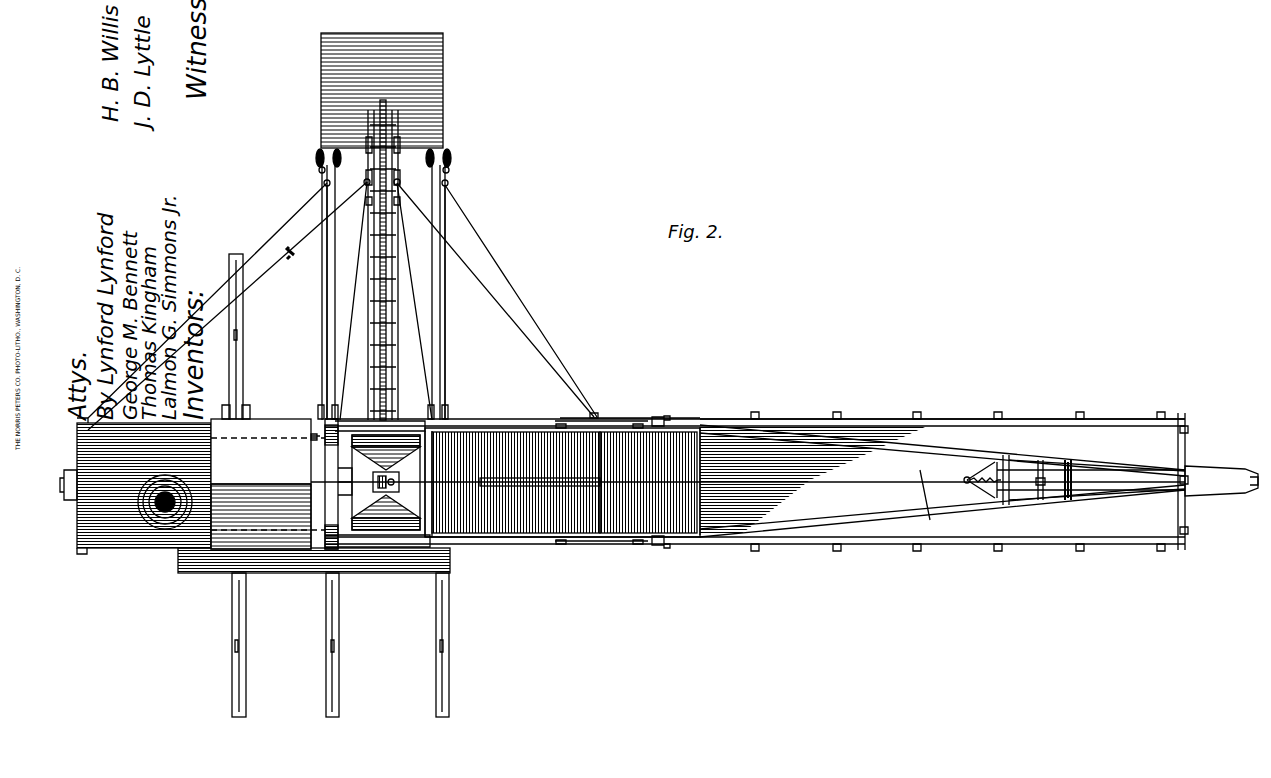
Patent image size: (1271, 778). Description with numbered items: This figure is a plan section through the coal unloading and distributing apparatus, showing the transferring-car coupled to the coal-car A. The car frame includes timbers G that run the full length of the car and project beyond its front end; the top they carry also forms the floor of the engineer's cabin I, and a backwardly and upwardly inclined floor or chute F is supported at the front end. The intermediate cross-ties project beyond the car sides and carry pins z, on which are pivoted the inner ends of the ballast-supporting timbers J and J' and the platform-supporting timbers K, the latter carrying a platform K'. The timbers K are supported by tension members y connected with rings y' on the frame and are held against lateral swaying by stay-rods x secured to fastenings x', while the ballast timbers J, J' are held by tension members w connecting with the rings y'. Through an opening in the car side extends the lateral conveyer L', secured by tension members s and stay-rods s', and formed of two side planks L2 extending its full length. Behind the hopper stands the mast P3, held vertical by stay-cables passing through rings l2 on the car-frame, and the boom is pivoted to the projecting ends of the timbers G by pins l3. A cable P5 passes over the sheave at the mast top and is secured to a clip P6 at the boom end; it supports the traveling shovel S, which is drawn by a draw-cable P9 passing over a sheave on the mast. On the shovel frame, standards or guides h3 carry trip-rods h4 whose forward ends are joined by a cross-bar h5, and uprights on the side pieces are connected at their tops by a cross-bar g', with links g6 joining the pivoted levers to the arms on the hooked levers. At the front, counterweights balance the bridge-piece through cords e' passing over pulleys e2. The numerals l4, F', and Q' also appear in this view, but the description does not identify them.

The platform K' is at (382, 90).
The screw rod l4 is at (394, 108).
The lateral conveyer L' is at (335, 284).
The side pieces or planks L2 is at (380, 352).
The rings l2 is at (392, 352).
The platform-supporting timbers K is at (377, 171).
The stay-rods x is at (342, 300).
The stay-rods s' is at (227, 306).
The tension members s is at (467, 301).
The tension members y is at (358, 302).
The rings y' is at (397, 403).
The fastenings x' is at (605, 400).
The ballast-supporting timbers J' is at (246, 485).
The ballast-supporting timbers J is at (387, 645).
The tension members w is at (246, 604).
The pins z is at (318, 418).
The engineer's cabin I is at (268, 484).
The mast P3 is at (340, 470).
The cable P5 is at (322, 490).
The draw-cable P9 is at (552, 484).
The roller F' is at (516, 482).
The inclined floor or chute F is at (648, 482).
The cords e' is at (605, 471).
The pulleys e2 is at (558, 423).
The pins l3 is at (665, 420).
The timbers G is at (660, 415).
The coal-car A is at (962, 418).
The clip P6 is at (1248, 468).
The cross-bar h5 is at (966, 477).
The standards or guides h3 is at (1008, 458).
The trip-rods h4 is at (1024, 470).
The cross-bar g' is at (1047, 493).
The links g6 is at (1050, 468).
The traveling shovel S is at (1097, 481).
The brace Q' is at (916, 486).